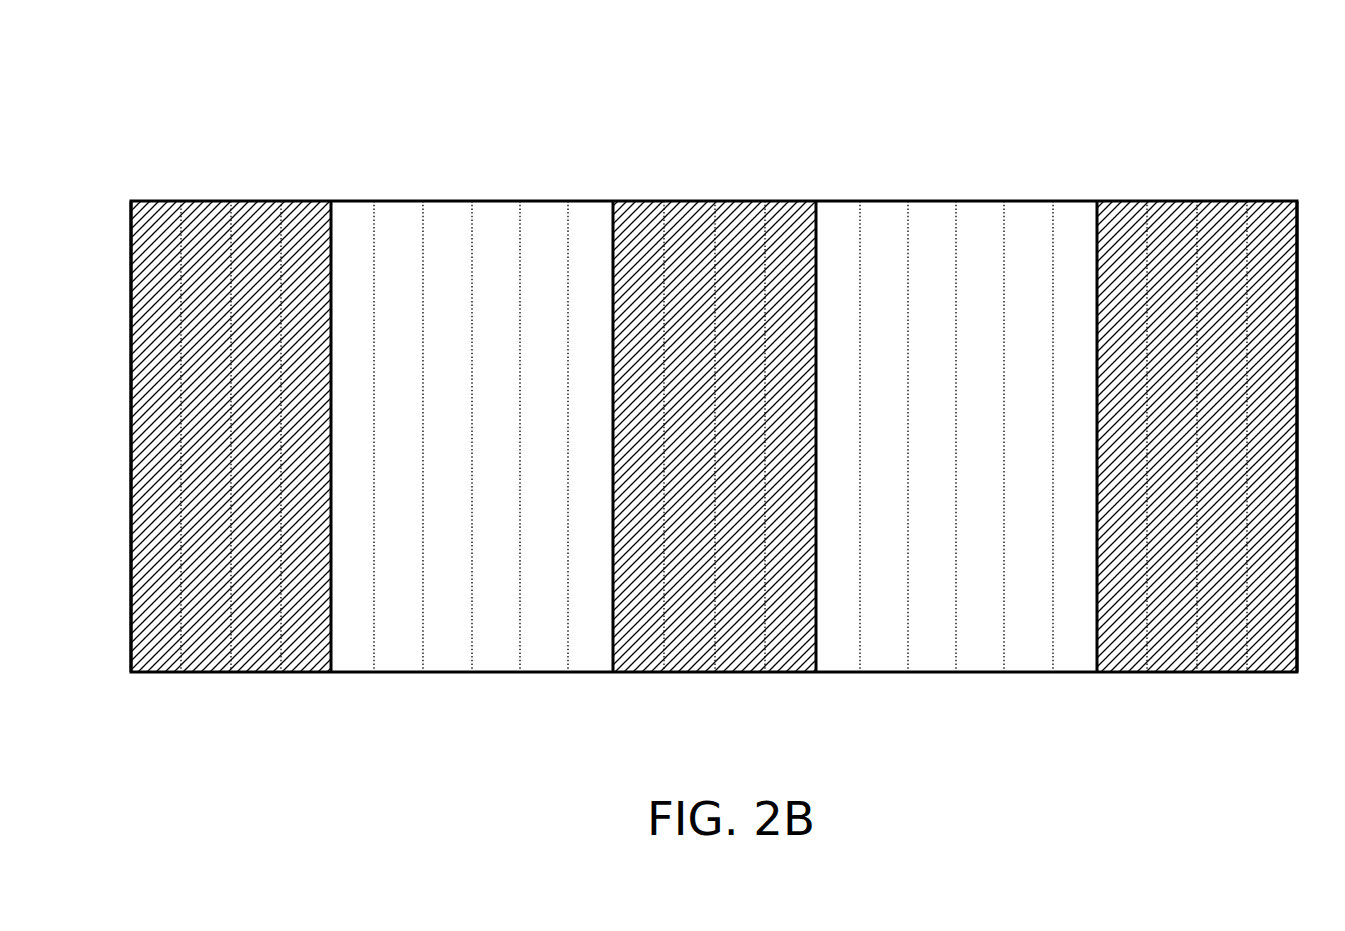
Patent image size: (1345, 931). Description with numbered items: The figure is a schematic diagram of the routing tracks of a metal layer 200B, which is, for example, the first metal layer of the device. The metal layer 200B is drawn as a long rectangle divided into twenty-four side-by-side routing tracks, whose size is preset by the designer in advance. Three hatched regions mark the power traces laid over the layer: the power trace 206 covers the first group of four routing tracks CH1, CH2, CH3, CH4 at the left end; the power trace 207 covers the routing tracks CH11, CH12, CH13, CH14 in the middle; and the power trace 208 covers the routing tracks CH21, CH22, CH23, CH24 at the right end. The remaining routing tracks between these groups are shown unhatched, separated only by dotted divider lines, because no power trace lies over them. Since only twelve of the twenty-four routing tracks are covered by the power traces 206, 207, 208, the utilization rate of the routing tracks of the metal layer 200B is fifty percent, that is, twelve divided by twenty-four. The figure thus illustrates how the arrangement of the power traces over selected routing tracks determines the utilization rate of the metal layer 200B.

The metal layer 200B is at (1192, 63).
The routing track CH1 is at (154, 212).
The routing track CH2 is at (198, 212).
The routing track CH3 is at (248, 212).
The routing track CH4 is at (298, 212).
The routing track CH11 is at (640, 212).
The routing track CH12 is at (686, 212).
The routing track CH13 is at (737, 212).
The routing track CH14 is at (784, 212).
The routing track CH21 is at (1125, 212).
The routing track CH22 is at (1170, 212).
The routing track CH23 is at (1220, 212).
The routing track CH24 is at (1268, 212).
The power trace 206 is at (252, 419).
The power trace 207 is at (732, 419).
The power trace 208 is at (1180, 419).